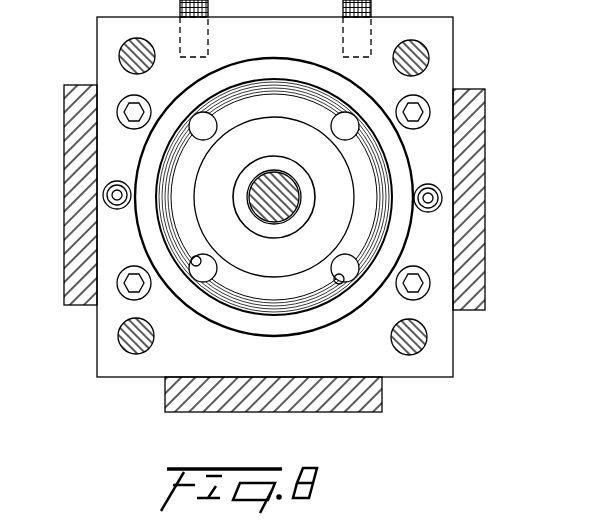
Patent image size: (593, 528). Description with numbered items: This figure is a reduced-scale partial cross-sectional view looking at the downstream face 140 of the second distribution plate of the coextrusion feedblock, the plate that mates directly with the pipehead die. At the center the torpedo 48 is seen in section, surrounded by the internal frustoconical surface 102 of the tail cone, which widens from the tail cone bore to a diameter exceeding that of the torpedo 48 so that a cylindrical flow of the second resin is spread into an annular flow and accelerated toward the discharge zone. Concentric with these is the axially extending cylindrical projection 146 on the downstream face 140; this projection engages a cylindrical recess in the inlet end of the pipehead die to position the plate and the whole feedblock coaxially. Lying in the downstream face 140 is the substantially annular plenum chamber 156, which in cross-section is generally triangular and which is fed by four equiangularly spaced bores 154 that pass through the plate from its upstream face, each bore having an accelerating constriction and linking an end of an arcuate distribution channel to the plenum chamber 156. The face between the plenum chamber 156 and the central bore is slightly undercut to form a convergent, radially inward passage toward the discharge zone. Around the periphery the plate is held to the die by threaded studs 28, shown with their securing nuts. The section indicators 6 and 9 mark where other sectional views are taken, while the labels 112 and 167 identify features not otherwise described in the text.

The threaded studs 28 is at (430, 52).
The torpedo 48 is at (252, 207).
The internal frustoconical surface 102 is at (271, 225).
The shaft end 112 is at (273, 172).
The downstream face 140 is at (396, 374).
The cylindrical projection 146 is at (212, 306).
The bores 154 is at (197, 262).
The plenum chamber 156 is at (370, 230).
The section line 6- 6 is at (148, 150).
The section line 9- 9 is at (197, 53).
The adjacent figure numeral 167 is at (590, 527).